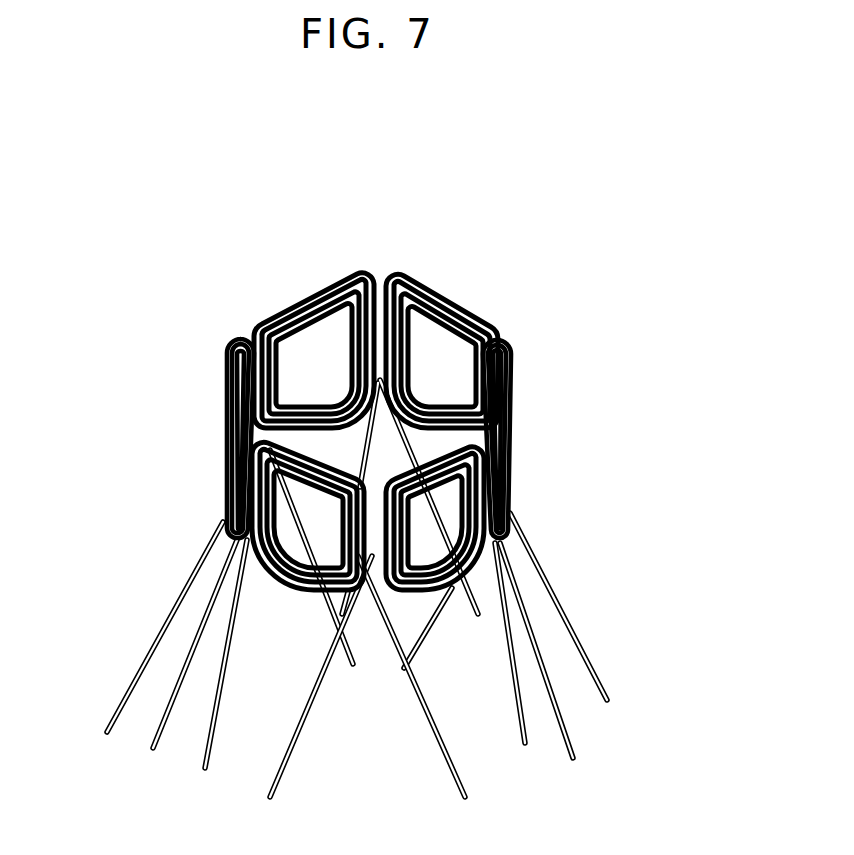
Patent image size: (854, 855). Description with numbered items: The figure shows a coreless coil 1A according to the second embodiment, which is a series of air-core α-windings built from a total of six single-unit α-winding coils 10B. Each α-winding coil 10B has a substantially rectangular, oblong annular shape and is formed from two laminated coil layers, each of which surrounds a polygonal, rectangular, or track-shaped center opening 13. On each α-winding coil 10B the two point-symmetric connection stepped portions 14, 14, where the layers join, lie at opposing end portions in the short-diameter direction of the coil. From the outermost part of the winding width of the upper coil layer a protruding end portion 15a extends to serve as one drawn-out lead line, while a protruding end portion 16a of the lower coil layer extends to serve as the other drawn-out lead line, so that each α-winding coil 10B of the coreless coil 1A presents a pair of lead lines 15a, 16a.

The coreless coil 1A is at (367, 491).
The α-winding coil 10B is at (278, 276).
The center opening 13 is at (336, 369).
The connection stepped portion 14 is at (377, 260).
The protruding end portion 15a is at (212, 752).
The protruding end portion 16a is at (147, 657).